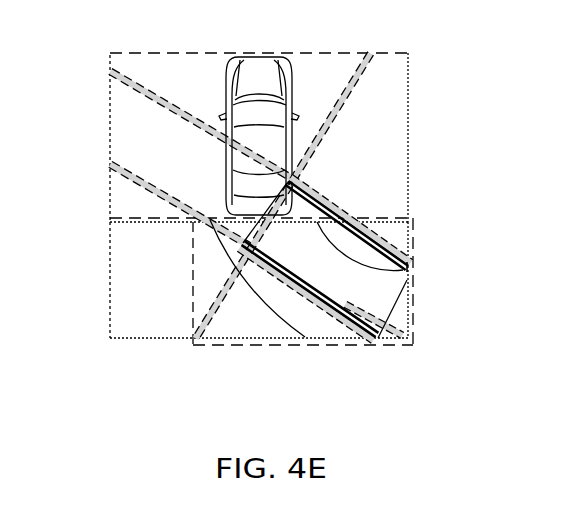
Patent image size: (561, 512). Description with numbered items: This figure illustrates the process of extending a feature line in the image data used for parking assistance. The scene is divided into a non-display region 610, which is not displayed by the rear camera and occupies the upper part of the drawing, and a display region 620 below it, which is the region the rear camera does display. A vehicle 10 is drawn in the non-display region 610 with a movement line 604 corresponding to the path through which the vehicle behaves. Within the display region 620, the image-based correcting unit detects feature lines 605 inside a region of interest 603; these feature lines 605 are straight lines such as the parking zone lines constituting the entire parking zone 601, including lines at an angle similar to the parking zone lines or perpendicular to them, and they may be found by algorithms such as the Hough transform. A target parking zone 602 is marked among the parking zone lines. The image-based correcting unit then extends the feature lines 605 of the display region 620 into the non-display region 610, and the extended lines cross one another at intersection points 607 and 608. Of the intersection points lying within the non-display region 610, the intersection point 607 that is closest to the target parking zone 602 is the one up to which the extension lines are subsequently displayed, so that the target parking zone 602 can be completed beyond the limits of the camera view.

The vehicle 10 is at (265, 62).
The non-display region 610 is at (110, 55).
The display region 620 is at (110, 222).
The intersection point 607 is at (291, 183).
The entire parking zone 601 is at (393, 243).
The target parking zone 602 is at (342, 309).
The region of interest 603 is at (413, 262).
The movement line 604 is at (265, 304).
The feature line 605 is at (382, 333).
The intersection point 608 is at (246, 246).